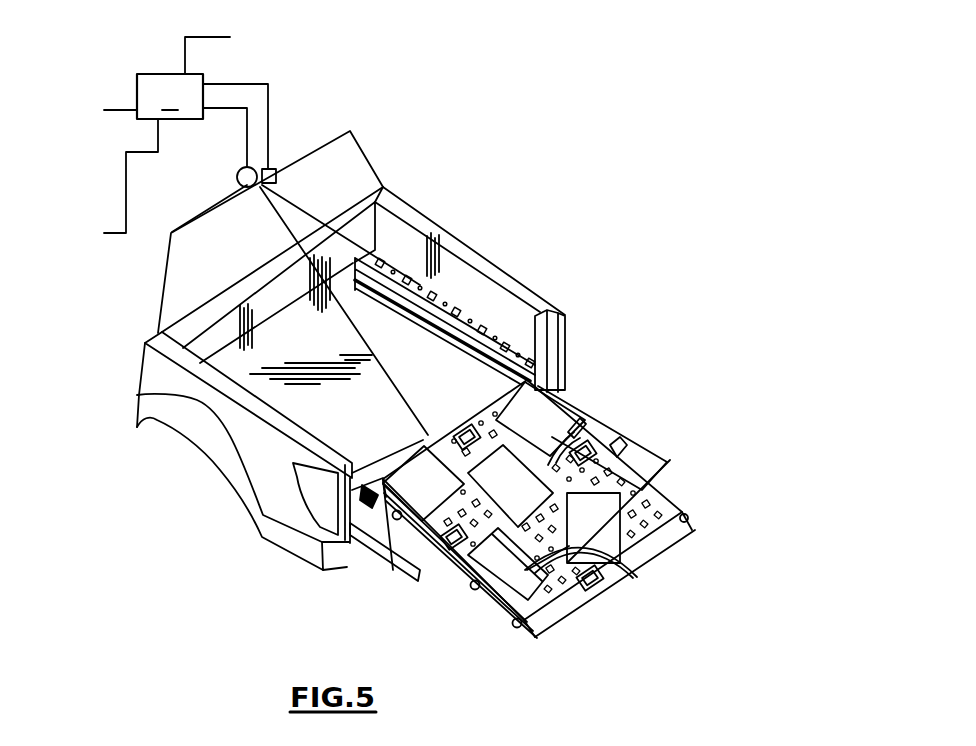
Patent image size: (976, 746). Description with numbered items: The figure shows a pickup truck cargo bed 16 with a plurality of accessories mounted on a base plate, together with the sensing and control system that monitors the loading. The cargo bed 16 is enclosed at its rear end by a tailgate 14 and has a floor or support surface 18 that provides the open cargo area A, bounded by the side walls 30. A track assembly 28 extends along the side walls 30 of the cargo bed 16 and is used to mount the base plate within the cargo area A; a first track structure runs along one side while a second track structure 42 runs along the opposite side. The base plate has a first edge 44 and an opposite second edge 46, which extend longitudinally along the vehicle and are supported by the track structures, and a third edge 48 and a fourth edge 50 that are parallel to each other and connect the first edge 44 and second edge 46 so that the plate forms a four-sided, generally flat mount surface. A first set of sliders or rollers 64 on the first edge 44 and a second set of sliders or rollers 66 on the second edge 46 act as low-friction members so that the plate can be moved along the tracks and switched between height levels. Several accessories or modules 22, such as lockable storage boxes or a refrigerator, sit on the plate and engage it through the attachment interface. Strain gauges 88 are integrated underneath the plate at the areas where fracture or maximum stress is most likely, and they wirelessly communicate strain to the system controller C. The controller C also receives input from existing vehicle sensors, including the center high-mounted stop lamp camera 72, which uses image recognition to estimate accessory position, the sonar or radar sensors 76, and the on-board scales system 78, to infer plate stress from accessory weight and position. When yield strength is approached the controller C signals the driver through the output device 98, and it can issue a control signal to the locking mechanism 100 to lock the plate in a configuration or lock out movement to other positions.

The output device 98 is at (277, 49).
The system controller C is at (186, 135).
The on-board scales system 78 is at (86, 135).
The locking mechanism 100 is at (92, 247).
The center high-mounted stop lamp camera 72 is at (236, 178).
The sonar and/or radar sensors 76 is at (274, 168).
The cargo bed 16 is at (135, 392).
The side walls 30 is at (525, 283).
The floor/support surface 18 is at (284, 352).
The cargo area A is at (226, 290).
The track assembly 28 is at (410, 258).
The second track structure 42 is at (522, 348).
The first edge 44 is at (495, 603).
The first set of sliders or rollers 64 is at (520, 629).
The second set of sliders or rollers 66 is at (688, 519).
The fourth edge 50 is at (695, 533).
The second edge 46 is at (672, 503).
The third edge 48 is at (393, 570).
The tailgate 14 is at (418, 563).
The accessories/modules 22 is at (560, 414).
The strain gauges 88 is at (596, 455).